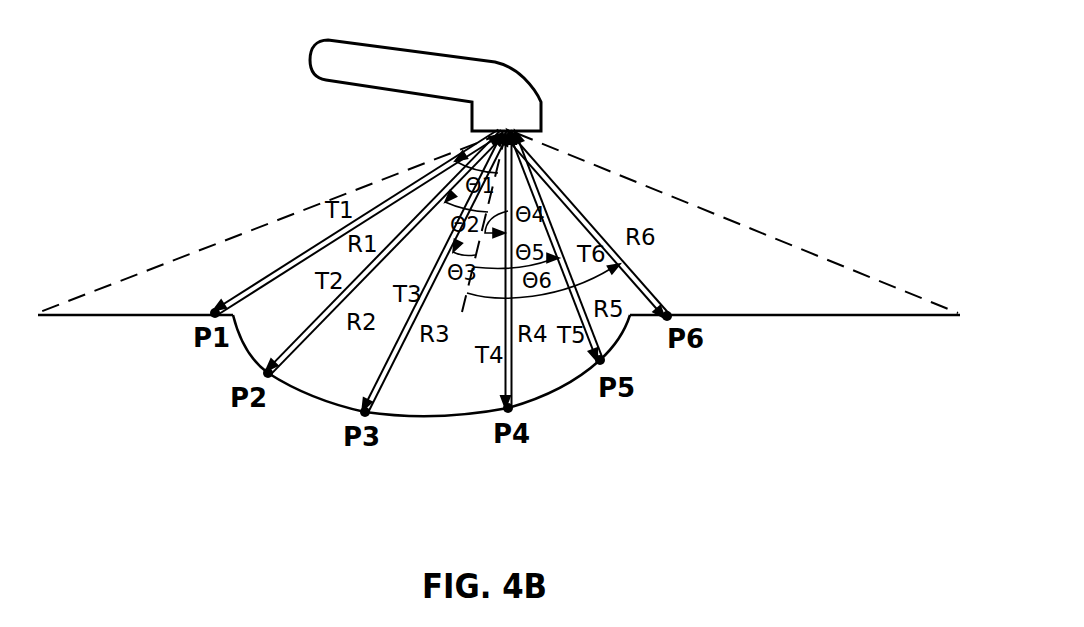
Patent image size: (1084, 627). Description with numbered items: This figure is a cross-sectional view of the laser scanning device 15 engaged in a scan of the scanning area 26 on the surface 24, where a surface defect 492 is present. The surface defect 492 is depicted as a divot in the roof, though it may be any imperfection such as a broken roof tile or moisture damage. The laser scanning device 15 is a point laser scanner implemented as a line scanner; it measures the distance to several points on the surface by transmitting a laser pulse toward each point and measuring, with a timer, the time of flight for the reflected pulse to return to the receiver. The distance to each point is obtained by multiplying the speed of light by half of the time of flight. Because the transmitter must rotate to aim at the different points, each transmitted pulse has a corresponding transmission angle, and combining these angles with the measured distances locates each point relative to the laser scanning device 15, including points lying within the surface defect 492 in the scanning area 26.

The laser scanning device 15 is at (346, 96).
The scanning area 26 is at (866, 328).
The surface 24 is at (723, 447).
The surface defect 492 is at (435, 450).